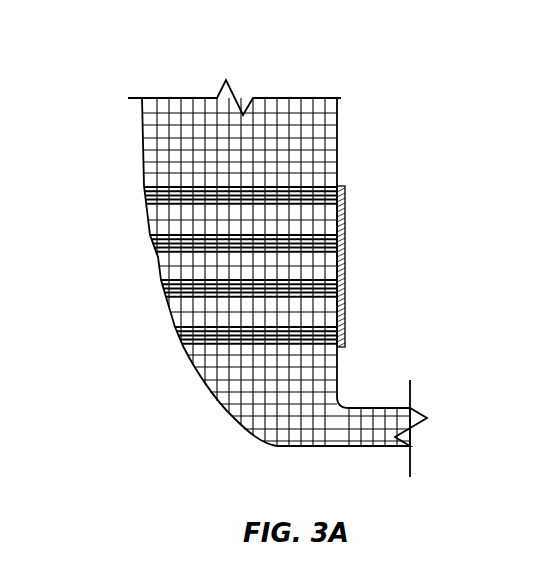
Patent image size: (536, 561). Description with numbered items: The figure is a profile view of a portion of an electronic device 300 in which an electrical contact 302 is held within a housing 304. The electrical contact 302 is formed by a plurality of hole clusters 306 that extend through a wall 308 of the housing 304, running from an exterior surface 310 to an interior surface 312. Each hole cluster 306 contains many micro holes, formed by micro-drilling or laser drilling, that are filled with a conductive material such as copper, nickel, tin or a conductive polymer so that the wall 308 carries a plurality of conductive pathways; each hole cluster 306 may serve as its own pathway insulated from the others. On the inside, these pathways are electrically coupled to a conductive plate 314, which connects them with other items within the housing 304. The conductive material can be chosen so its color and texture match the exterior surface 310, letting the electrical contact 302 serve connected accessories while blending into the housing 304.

The electronic device 300 is at (280, 68).
The electrical contact 302 is at (357, 183).
The housing 304 is at (352, 458).
The hole clusters 306 is at (182, 343).
The wall 308 is at (155, 135).
The exterior surface 310 is at (135, 394).
The interior surface 312 is at (427, 283).
The conductive plate 314 is at (345, 250).